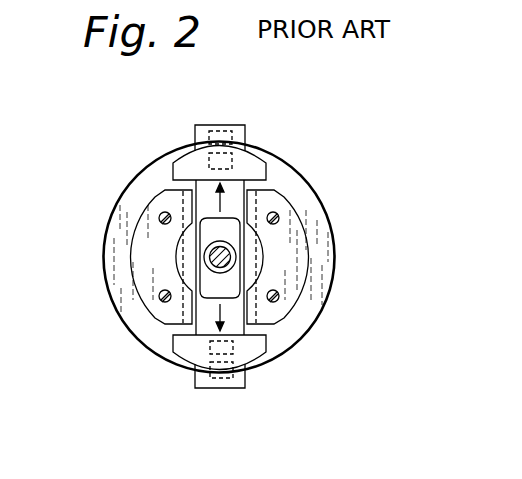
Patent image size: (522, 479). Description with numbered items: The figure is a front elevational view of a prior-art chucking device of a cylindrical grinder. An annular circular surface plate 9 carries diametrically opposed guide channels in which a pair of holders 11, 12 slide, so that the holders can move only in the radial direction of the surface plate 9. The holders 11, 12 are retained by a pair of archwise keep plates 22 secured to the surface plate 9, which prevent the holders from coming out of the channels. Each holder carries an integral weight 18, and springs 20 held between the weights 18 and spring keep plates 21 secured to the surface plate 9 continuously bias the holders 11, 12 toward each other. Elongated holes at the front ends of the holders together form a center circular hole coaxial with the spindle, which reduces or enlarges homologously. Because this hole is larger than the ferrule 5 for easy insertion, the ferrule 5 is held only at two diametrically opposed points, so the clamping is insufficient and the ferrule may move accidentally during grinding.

The surface plate 9 is at (334, 290).
The keep plates 22 is at (302, 257).
The holder 11 is at (242, 192).
The holder 12 is at (244, 328).
The ferrule 5 is at (244, 250).
The weights 18 is at (254, 170).
The spring keep plates 21 is at (238, 124).
The springs 20 is at (214, 157).